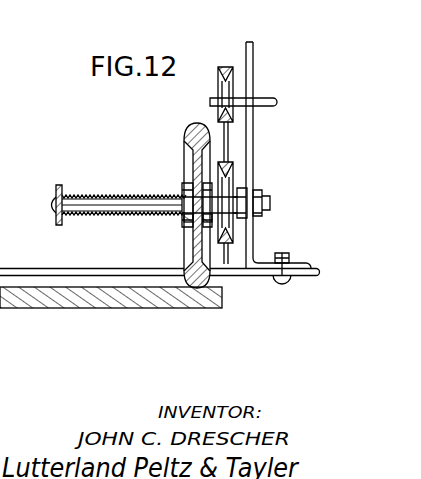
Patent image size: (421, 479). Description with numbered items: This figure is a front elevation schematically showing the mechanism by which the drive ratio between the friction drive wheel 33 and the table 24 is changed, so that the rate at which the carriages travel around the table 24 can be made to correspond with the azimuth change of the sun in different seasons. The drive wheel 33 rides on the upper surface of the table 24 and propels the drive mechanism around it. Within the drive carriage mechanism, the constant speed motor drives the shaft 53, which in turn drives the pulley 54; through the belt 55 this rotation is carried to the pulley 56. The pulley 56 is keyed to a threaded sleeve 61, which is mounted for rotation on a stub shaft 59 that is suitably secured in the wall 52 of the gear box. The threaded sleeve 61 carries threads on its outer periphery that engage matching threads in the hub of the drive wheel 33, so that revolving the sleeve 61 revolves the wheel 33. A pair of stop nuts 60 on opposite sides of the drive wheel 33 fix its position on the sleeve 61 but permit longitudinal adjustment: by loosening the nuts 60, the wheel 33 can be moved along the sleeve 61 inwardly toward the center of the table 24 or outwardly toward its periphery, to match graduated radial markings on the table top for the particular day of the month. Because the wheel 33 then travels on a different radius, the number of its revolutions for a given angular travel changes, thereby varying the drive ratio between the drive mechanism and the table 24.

The table 24 is at (54, 308).
The drive wheel 33 is at (186, 125).
The wall 52 is at (255, 240).
The shaft 53 is at (260, 98).
The pulley 54 is at (218, 75).
The belt 55 is at (229, 146).
The pulley 56 is at (233, 176).
The stub shaft 59 is at (270, 204).
The stop nuts 60 is at (184, 183).
The threaded sleeve 61 is at (110, 178).